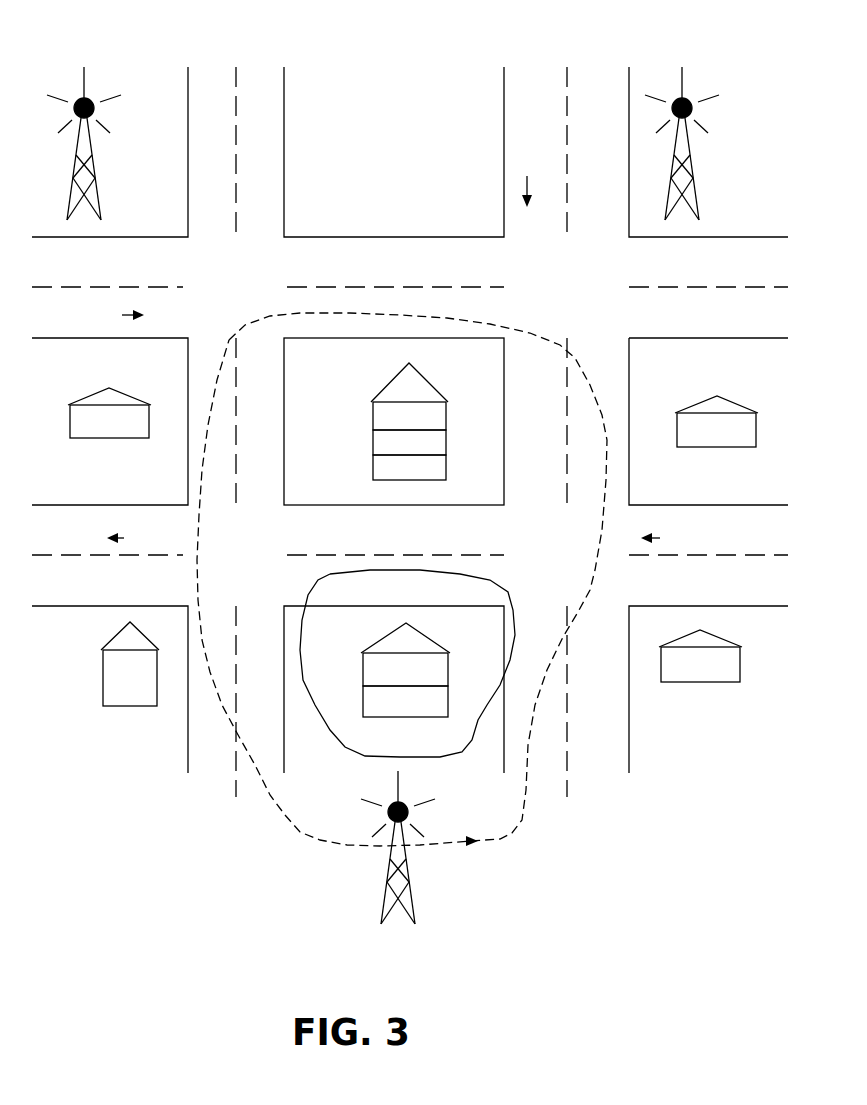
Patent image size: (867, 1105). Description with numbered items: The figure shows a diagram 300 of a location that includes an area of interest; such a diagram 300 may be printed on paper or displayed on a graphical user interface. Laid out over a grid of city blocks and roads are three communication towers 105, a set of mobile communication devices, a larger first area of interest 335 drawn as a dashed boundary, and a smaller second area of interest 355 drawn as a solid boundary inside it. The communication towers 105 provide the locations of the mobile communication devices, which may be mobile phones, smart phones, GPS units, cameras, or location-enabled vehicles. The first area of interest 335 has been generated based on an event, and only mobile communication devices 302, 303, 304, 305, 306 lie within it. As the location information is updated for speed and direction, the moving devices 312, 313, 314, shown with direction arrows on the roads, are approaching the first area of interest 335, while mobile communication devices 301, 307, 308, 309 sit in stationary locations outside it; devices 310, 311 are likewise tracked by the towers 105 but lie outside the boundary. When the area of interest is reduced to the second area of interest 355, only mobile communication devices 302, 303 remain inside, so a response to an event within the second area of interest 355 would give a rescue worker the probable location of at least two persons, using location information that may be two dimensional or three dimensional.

The diagram 300 is at (139, 37).
The communication tower 105 is at (388, 495).
The mobile communication device 301 is at (130, 664).
The mobile communication device 302 is at (405, 654).
The mobile communication device 303 is at (405, 701).
The mobile communication device 304 is at (409, 396).
The mobile communication device 305 is at (409, 442).
The mobile communication device 306 is at (409, 467).
The mobile communication device 307 is at (700, 656).
The mobile communication device 308 is at (716, 421).
The mobile communication device 309 is at (109, 413).
The mobile communication device 310 is at (394, 312).
The mobile communication device 311 is at (138, 538).
The mobile communication device 312 is at (670, 538).
The mobile communication device 313 is at (533, 181).
The mobile communication device 314 is at (108, 316).
The first area of interest 335 is at (277, 805).
The second area of interest 355 is at (342, 742).